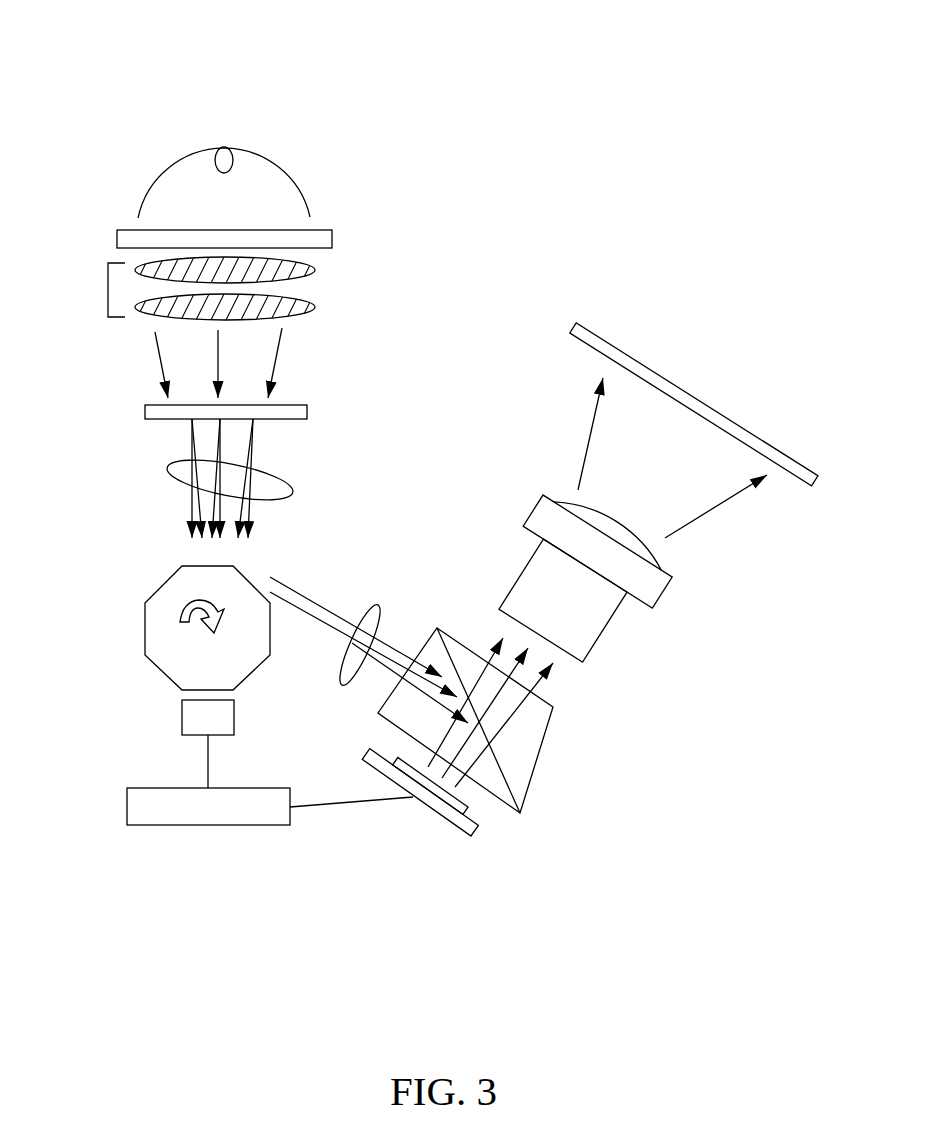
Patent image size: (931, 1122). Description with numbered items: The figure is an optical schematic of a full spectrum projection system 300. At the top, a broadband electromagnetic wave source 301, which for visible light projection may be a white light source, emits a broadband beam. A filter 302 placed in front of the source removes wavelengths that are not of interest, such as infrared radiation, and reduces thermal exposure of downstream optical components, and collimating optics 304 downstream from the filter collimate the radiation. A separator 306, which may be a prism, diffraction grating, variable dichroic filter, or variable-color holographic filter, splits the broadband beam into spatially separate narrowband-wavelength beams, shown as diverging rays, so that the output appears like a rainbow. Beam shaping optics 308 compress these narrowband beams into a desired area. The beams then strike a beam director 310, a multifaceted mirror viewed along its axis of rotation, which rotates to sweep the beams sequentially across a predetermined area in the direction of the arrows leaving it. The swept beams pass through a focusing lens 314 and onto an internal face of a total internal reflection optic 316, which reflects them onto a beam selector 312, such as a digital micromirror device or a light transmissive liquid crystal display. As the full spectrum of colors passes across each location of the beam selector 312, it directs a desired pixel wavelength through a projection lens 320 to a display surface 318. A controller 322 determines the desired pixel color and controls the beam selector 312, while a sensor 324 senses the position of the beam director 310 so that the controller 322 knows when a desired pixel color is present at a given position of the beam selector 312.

The full spectrum projection system 300 is at (107, 77).
The broadband electromagnetic wave source 301 is at (152, 185).
The filter 302 is at (117, 240).
The collimating optics 304 is at (108, 290).
The separator 306 is at (145, 410).
The beam shaping optics 308 is at (168, 467).
The beam director 310 is at (145, 628).
The beam selector 312 is at (478, 830).
The focusing lens 314 is at (375, 605).
The total internal reflection optic 316 is at (542, 743).
The display surface 318 is at (763, 437).
The projection lens 320 is at (668, 583).
The controller 322 is at (127, 807).
The sensor 324 is at (182, 715).